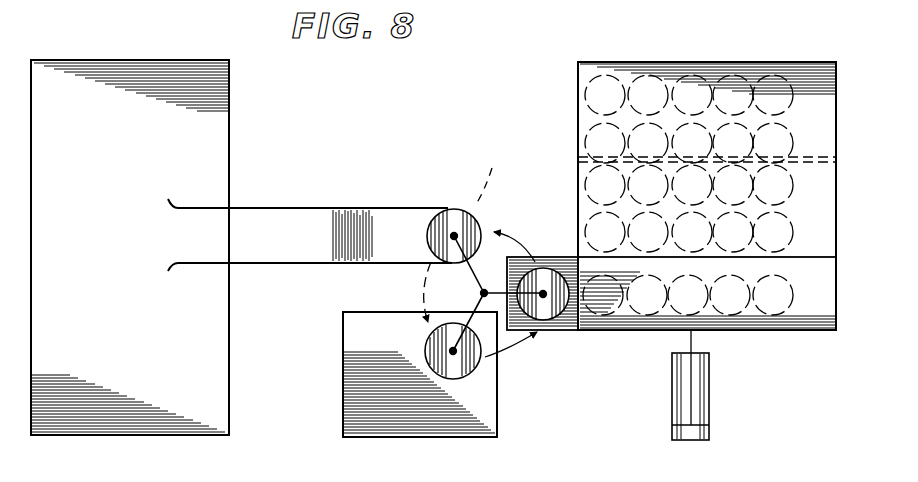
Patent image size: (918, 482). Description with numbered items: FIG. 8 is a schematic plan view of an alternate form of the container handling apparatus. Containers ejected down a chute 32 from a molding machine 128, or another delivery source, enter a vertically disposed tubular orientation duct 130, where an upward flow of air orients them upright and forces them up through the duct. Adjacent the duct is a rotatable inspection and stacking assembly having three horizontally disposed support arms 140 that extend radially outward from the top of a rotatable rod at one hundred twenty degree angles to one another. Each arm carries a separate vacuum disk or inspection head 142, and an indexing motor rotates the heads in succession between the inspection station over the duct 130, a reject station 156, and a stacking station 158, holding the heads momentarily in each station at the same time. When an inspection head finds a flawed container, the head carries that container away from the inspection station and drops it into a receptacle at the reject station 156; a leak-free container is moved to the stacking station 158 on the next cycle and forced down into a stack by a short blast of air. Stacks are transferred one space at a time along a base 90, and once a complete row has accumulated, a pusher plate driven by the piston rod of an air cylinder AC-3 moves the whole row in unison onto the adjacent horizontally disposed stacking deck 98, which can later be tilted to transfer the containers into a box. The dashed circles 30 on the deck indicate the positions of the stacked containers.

The molding machine 128 is at (229, 117).
The chute 32 is at (248, 212).
The tubular orientation duct 130 is at (458, 240).
The vacuum disk or inspection head 142 is at (443, 211).
The support arms 140 is at (478, 304).
The reject station 156 is at (453, 425).
The stacking station 158 is at (562, 346).
The stacking deck 98 is at (841, 76).
The containers 30 is at (772, 80).
The base 90 is at (832, 310).
The air cylinder AC-3 is at (672, 390).